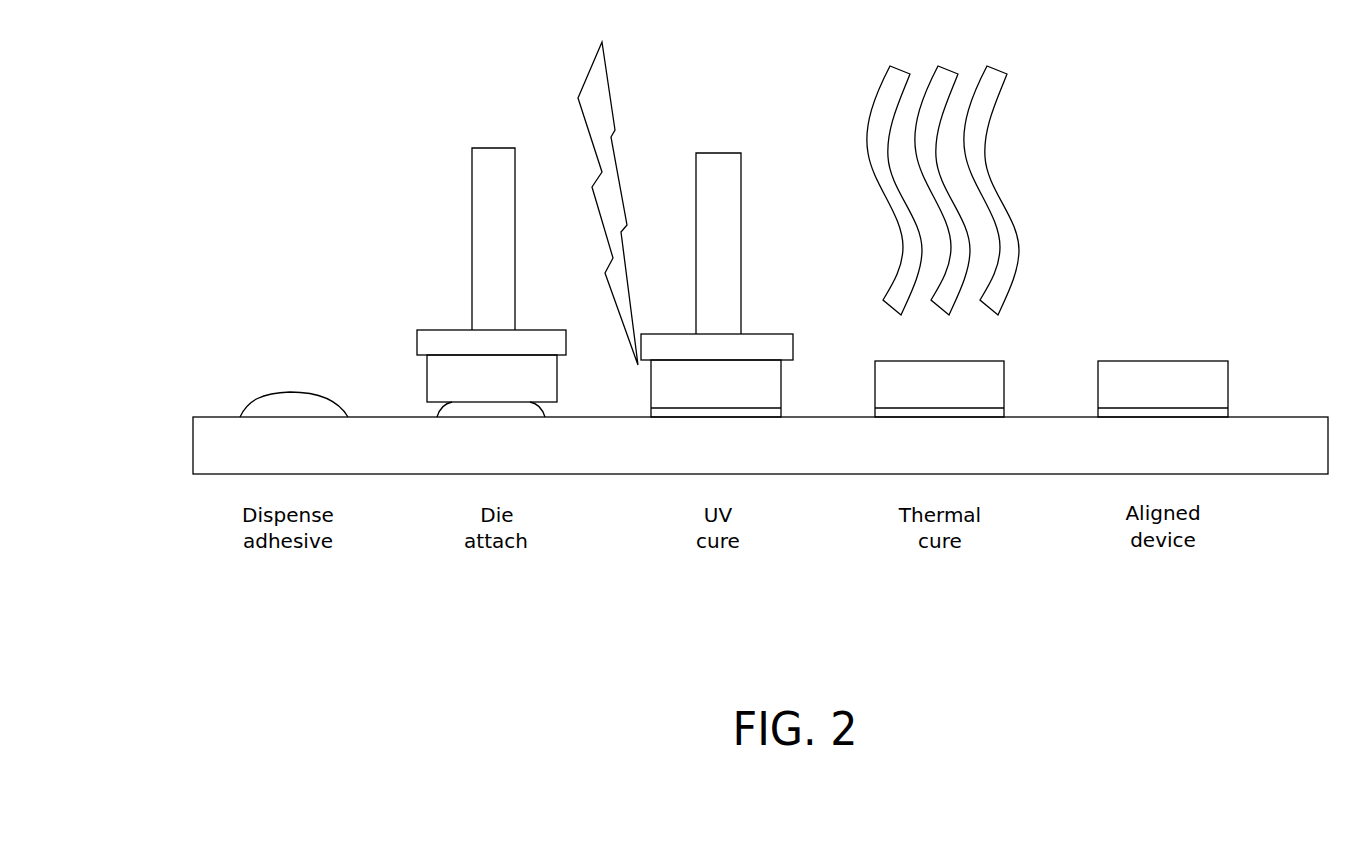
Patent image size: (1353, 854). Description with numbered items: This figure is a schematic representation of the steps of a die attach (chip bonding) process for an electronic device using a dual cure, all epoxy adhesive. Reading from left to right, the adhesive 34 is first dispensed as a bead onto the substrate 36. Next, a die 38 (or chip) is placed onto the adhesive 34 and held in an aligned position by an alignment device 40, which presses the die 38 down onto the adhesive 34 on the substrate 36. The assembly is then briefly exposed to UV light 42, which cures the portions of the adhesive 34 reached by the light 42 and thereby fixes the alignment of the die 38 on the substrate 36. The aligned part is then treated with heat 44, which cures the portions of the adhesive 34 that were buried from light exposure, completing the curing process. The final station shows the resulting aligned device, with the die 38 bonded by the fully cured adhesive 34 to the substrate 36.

The adhesive 34 is at (282, 408).
The substrate 36 is at (208, 442).
The die 38 is at (447, 378).
The alignment device 40 is at (480, 212).
The UV light 42 is at (596, 101).
The heat 44 is at (993, 98).